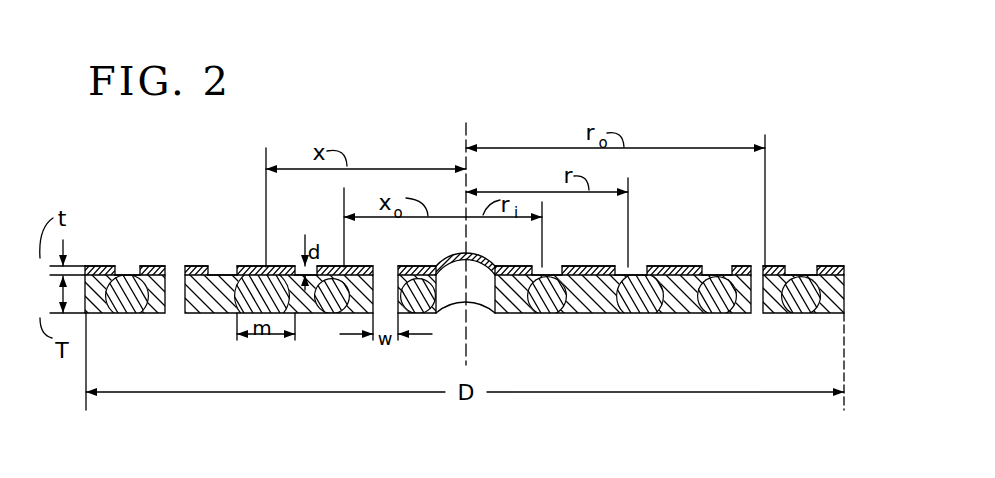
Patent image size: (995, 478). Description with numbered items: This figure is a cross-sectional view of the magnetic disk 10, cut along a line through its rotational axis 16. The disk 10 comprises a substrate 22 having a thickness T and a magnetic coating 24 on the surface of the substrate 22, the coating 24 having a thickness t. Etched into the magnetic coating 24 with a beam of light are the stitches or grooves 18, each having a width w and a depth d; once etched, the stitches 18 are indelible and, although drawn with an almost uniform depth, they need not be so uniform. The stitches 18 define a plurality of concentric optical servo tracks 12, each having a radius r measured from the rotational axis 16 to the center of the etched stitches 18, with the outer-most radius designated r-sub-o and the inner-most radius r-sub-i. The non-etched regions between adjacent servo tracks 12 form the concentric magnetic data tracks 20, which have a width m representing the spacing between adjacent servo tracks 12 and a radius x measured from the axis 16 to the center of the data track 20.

The magnetic disk 10 is at (468, 299).
The optical servo track 12 is at (130, 273).
The rotational axis 16 is at (462, 306).
The etched stitch 18 is at (103, 315).
The magnetic data track 20 is at (118, 264).
The substrate 22 is at (140, 315).
The magnetic coating 24 is at (102, 264).